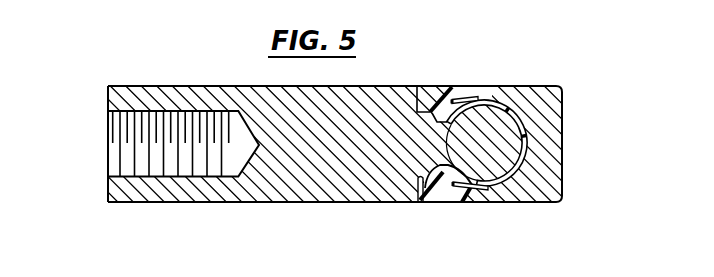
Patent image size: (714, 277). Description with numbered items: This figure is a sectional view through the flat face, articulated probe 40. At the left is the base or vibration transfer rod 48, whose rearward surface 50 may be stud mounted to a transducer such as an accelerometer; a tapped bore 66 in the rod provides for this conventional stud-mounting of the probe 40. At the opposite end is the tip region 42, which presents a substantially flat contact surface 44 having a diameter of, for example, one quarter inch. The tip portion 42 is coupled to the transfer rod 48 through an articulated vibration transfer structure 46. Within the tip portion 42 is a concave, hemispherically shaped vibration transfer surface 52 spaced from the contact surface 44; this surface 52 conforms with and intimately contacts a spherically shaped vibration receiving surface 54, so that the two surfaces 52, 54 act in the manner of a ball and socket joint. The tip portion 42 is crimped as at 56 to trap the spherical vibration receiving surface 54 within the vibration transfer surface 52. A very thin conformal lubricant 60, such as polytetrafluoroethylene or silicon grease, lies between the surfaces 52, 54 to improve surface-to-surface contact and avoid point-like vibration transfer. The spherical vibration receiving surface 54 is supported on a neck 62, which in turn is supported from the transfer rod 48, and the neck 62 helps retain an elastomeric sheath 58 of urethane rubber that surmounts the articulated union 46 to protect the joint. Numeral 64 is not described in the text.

The probe 40 is at (234, 66).
The tip region 42 is at (513, 87).
The contact surface 44 is at (563, 164).
The articulated vibration transfer structure 46 is at (460, 80).
The vibration transfer rod 48 is at (167, 86).
The rearward surface 50 is at (108, 99).
The vibration transfer surface 52 is at (525, 133).
The vibration receiving surface 54 is at (494, 190).
The crimp 56 is at (462, 198).
The elastomeric sheath 58 is at (438, 98).
The lubricant 60 is at (497, 103).
The neck 62 is at (447, 150).
The seal dome 64 is at (433, 199).
The tapped bore 66 is at (123, 177).